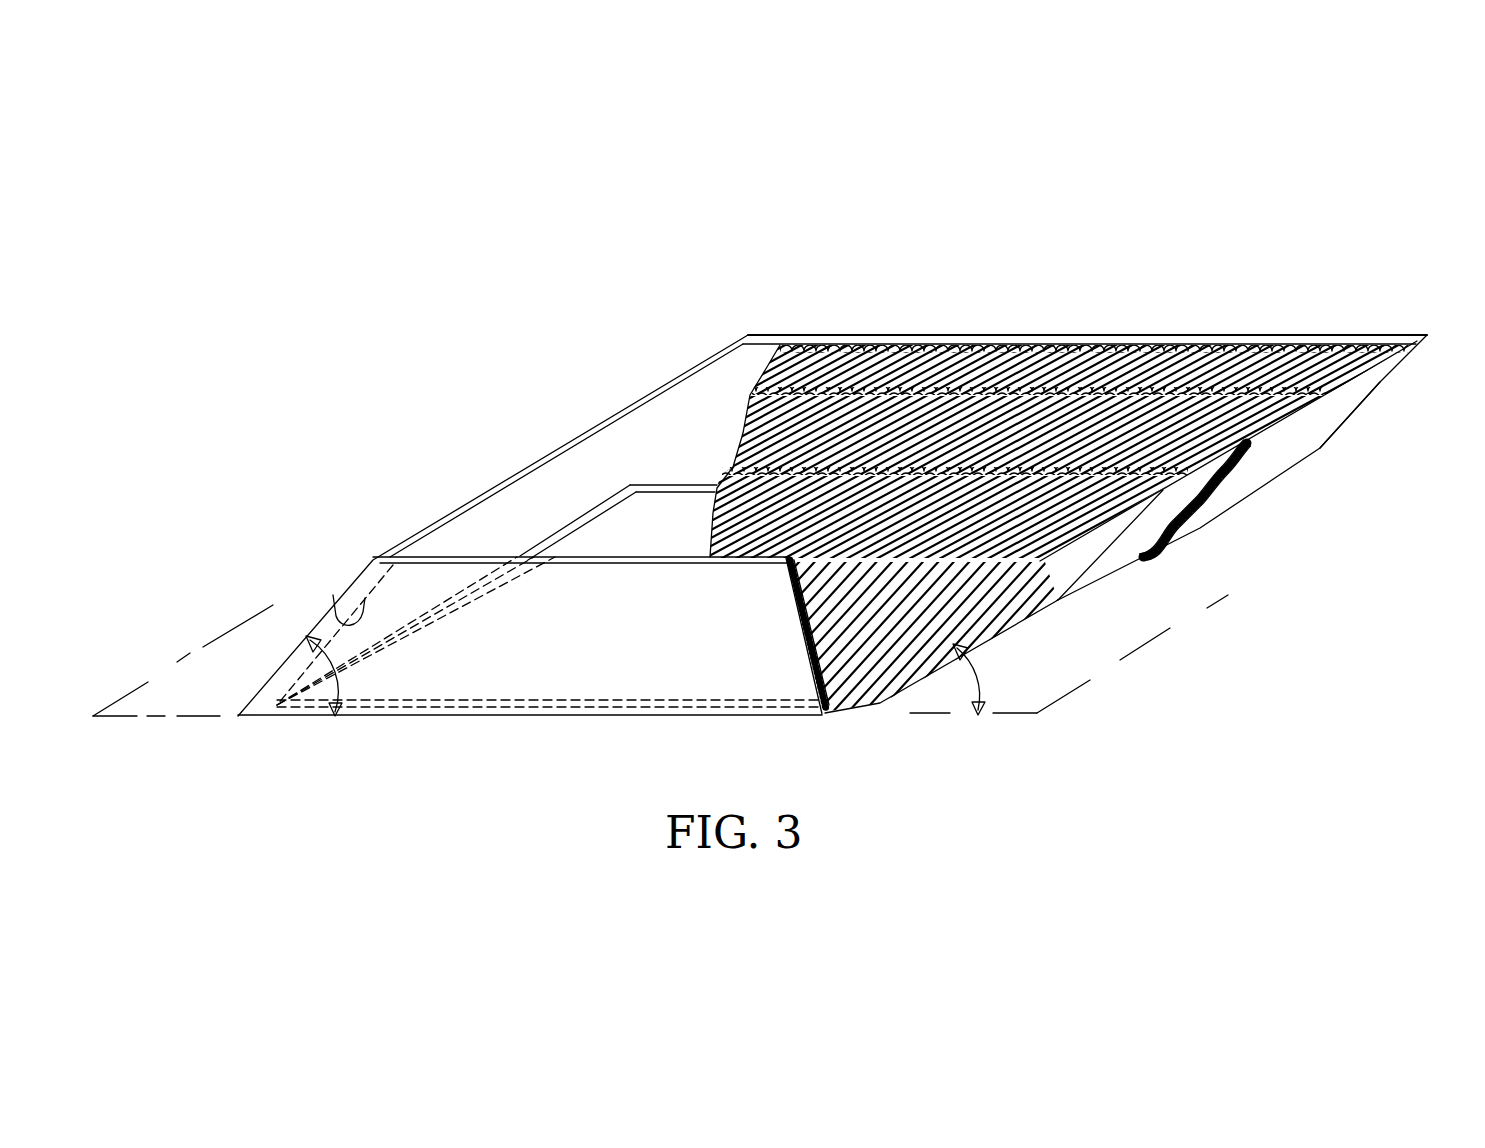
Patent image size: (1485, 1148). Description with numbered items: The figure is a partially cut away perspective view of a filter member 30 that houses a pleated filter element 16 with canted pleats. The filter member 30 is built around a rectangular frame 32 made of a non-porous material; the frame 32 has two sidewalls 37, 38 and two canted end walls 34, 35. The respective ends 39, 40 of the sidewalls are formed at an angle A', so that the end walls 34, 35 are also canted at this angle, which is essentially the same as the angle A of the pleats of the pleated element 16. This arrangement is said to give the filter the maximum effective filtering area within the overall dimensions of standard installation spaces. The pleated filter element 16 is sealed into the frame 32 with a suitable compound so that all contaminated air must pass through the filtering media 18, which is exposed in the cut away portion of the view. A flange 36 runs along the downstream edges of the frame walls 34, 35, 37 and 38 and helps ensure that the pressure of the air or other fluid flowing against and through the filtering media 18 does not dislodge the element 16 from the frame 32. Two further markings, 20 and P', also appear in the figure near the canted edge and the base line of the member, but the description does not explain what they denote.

The filter member 30 is at (760, 208).
The rectangular frame 32 is at (565, 418).
The canted end wall 34 is at (493, 517).
The canted end wall 35 is at (1321, 448).
The flange 36 is at (566, 532).
The sidewall 37 is at (540, 673).
The sidewall 38 is at (957, 338).
The end of sidewall 39 is at (668, 435).
The end of sidewall 40 is at (1388, 374).
The pleated filter element 16 is at (1126, 582).
The filtering media 18 is at (1058, 578).
The seam 20 is at (1173, 487).
The angle A is at (1003, 679).
The angle A' is at (385, 676).
The plane P prime P' is at (550, 711).